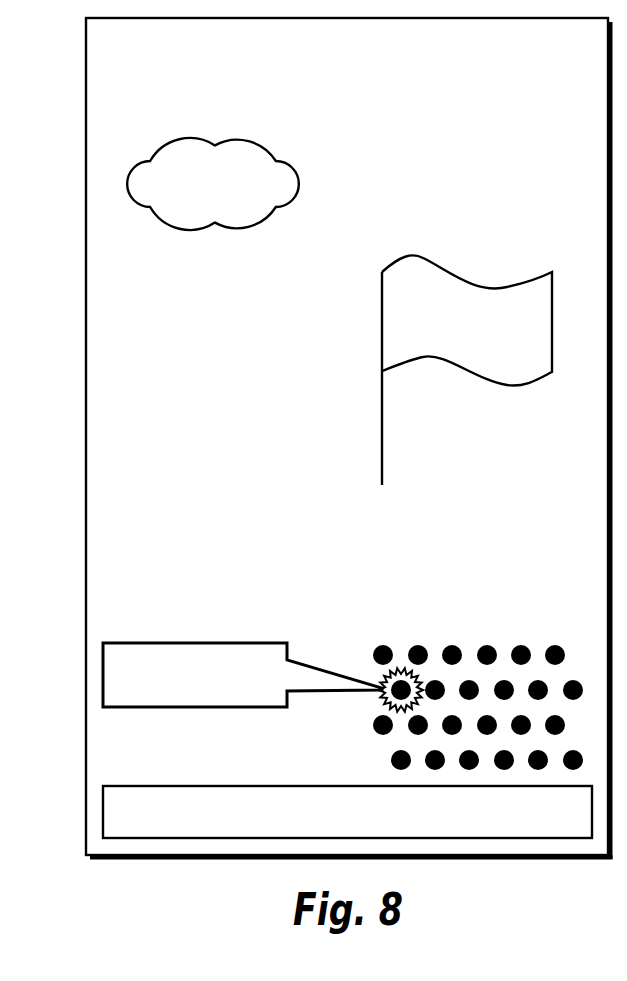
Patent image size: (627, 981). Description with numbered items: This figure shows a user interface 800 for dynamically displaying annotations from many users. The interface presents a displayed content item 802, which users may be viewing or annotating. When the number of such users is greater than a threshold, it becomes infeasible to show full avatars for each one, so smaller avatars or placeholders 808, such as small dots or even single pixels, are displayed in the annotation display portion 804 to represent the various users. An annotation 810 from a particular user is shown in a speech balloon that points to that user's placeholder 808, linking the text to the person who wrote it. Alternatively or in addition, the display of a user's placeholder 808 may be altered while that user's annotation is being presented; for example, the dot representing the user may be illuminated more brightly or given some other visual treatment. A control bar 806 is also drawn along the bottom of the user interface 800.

The user interface 800 is at (183, 859).
The displayed content item 802 is at (115, 323).
The annotation display portion 804 is at (202, 648).
The action bar with submit and like controls 806 is at (103, 812).
The placeholders 808 is at (380, 700).
The annotation 810 is at (156, 642).